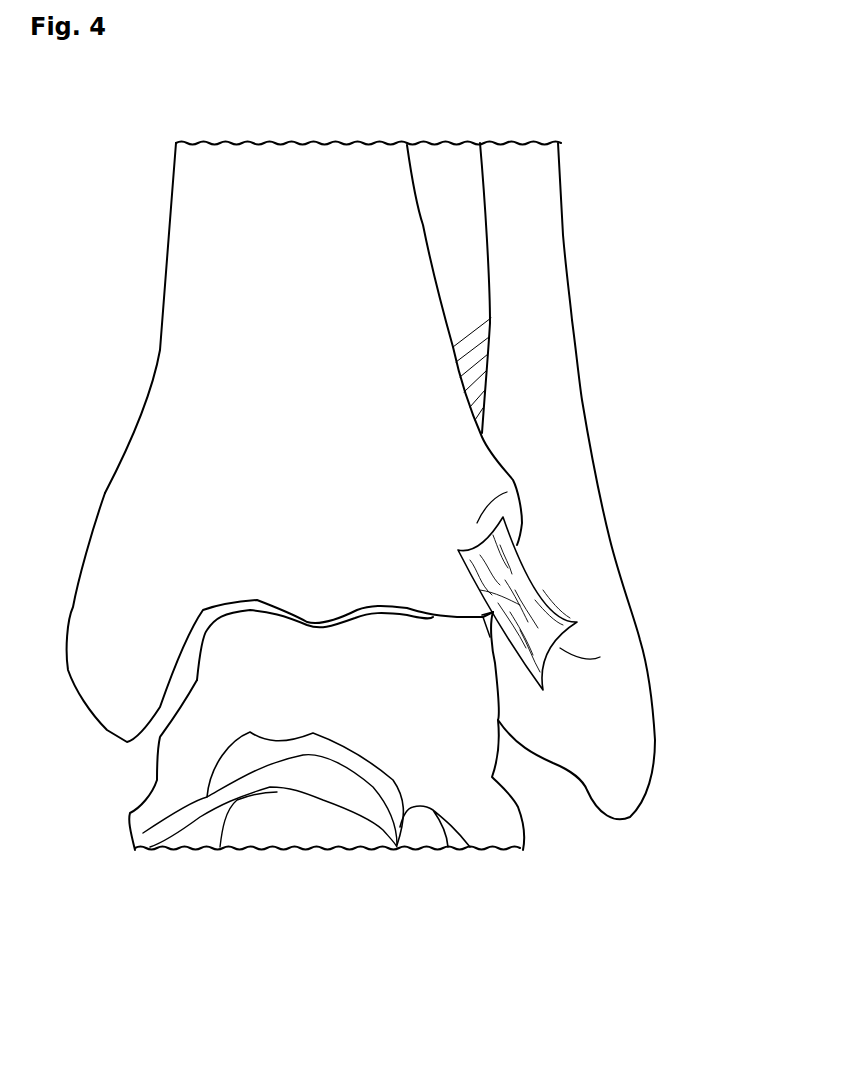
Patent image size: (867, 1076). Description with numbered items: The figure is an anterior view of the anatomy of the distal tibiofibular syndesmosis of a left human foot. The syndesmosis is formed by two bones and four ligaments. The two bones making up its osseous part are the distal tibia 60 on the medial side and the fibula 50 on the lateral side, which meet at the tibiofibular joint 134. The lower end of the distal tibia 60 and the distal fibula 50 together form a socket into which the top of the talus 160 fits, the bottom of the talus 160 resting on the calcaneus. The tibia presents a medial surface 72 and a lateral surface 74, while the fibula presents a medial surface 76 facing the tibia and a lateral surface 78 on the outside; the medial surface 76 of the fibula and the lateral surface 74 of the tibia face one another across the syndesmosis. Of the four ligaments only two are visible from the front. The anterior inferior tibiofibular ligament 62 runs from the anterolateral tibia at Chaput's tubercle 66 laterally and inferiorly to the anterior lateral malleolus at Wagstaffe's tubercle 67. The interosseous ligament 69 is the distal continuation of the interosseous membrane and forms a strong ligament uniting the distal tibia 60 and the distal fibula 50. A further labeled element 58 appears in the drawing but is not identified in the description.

The fibula 50 is at (560, 362).
The bone graft 58 is at (525, 542).
The distal tibia 60 is at (178, 412).
The anterior inferior tibiofibular ligament 62 is at (512, 595).
The Chaput's tubercle 66 is at (507, 492).
The Wagstaffe's tubercle 67 is at (600, 657).
The interosseous ligament 69 is at (465, 370).
The medial surface of the tibia 72 is at (125, 448).
The lateral surface of the tibia 74 is at (420, 178).
The medial surface of the fibula 76 is at (487, 167).
The lateral surface of the fibula 78 is at (562, 188).
The tibiofibular joint 134 is at (690, 547).
The talus 160 is at (443, 780).